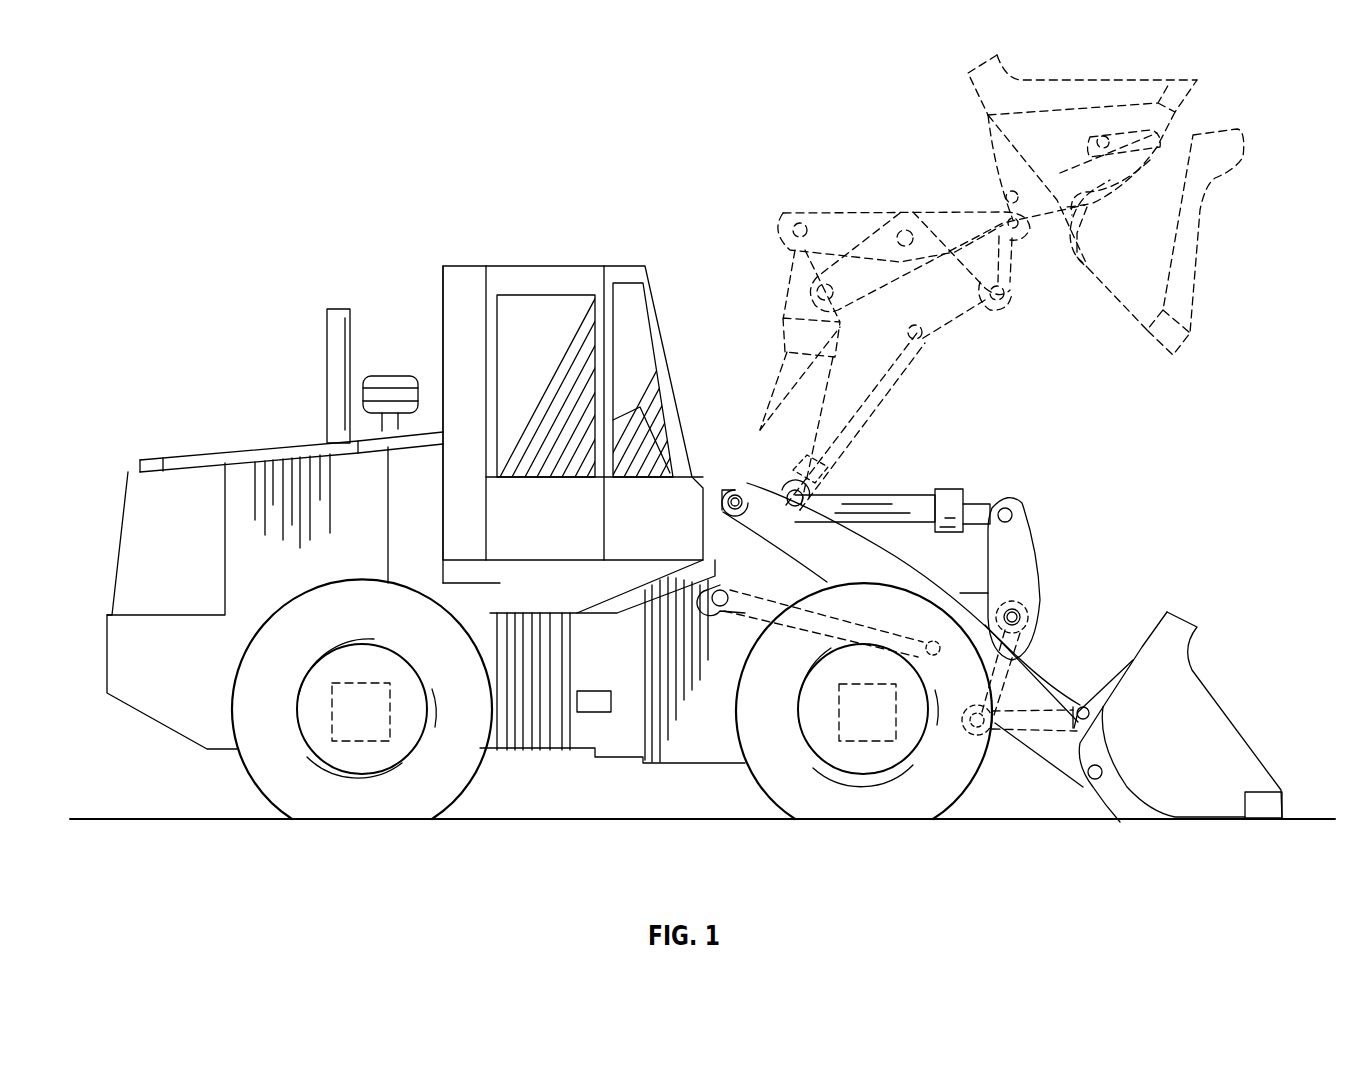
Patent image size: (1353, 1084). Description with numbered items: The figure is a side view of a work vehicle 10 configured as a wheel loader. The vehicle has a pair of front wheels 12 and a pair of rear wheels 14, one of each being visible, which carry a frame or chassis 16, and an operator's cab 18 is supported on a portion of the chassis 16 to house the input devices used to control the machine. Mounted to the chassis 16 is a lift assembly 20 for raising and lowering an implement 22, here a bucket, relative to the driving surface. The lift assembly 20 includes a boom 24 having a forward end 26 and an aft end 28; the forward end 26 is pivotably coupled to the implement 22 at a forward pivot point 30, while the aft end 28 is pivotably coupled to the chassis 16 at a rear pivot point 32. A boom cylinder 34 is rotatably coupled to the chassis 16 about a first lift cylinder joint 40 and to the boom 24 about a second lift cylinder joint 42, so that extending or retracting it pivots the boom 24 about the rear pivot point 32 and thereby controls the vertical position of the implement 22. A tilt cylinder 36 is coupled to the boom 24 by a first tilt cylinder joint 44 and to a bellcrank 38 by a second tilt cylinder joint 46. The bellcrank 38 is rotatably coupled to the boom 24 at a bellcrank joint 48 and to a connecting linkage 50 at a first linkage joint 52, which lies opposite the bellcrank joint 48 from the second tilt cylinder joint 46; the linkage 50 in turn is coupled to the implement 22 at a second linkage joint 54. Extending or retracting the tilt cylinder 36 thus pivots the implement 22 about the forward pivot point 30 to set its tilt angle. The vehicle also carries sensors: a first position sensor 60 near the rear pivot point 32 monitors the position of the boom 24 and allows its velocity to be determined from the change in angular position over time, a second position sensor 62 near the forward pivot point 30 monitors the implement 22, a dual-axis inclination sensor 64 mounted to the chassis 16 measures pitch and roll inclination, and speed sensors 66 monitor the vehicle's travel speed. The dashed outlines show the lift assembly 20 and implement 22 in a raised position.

The work vehicle 10 is at (270, 182).
The front wheels 12 is at (940, 787).
The rear wheels 14 is at (272, 762).
The frame or chassis 16 is at (512, 718).
The operator's cab 18 is at (640, 337).
The lift assembly 20 is at (1070, 440).
The implement 22 is at (1245, 720).
The boom 24 is at (1002, 682).
The forward end 26 is at (1065, 755).
The aft end 28 is at (725, 490).
The forward pivot point 30 is at (1098, 780).
The rear pivot point 32 is at (760, 428).
The boom cylinder 34 is at (745, 635).
The tilt cylinder 36 is at (890, 475).
The bellcrank 38 is at (1020, 560).
The first lift cylinder joint 40 is at (712, 605).
The second lift cylinder joint 42 is at (928, 640).
The first tilt cylinder joint 44 is at (803, 490).
The second tilt cylinder joint 46 is at (1008, 508).
The bellcrank joint 48 is at (1010, 605).
The connecting linkage 50 is at (1045, 715).
The first linkage joint 52 is at (982, 620).
The second linkage joint 54 is at (1087, 705).
The first position sensor 60 is at (720, 513).
The second position sensor 62 is at (1028, 600).
The dual-axis inclination sensor 64 is at (593, 712).
The speed sensor 66 is at (360, 741).